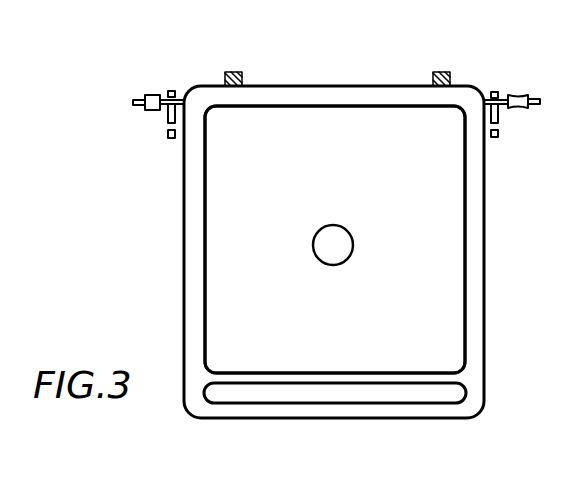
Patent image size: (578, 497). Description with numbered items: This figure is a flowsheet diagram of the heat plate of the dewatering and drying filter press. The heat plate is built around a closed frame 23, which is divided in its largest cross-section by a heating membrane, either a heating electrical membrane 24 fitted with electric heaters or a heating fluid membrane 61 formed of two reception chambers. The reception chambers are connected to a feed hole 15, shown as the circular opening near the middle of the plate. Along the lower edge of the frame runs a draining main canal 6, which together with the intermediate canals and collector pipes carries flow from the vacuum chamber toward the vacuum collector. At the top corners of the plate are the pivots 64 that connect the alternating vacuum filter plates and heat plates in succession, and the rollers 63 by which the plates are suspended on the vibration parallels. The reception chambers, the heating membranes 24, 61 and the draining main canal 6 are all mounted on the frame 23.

The draining main canal 6 is at (337, 392).
The feed hole 15 is at (342, 250).
The closed frame 23 is at (193, 387).
The heating electrical membrane 24 is at (342, 142).
The heating fluid membrane 61 is at (410, 73).
The roller 63 is at (157, 95).
The pivot 64 is at (178, 104).